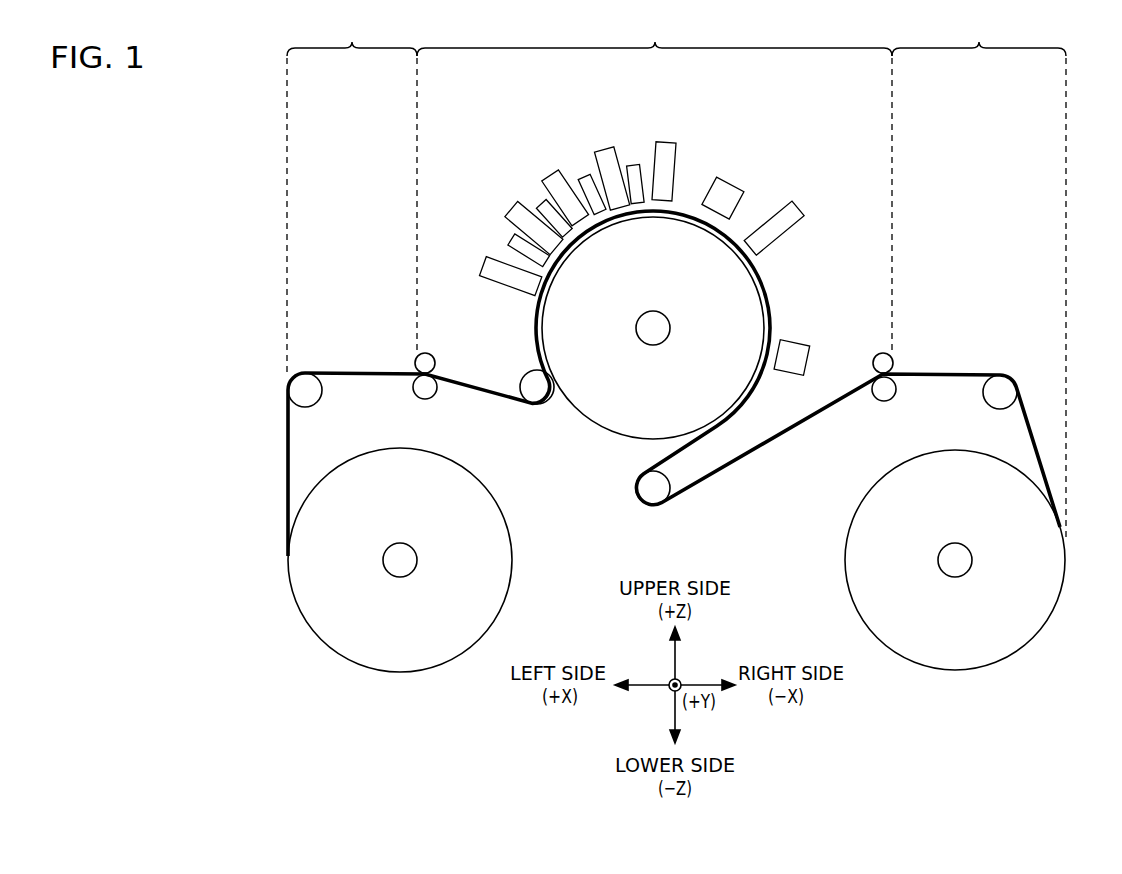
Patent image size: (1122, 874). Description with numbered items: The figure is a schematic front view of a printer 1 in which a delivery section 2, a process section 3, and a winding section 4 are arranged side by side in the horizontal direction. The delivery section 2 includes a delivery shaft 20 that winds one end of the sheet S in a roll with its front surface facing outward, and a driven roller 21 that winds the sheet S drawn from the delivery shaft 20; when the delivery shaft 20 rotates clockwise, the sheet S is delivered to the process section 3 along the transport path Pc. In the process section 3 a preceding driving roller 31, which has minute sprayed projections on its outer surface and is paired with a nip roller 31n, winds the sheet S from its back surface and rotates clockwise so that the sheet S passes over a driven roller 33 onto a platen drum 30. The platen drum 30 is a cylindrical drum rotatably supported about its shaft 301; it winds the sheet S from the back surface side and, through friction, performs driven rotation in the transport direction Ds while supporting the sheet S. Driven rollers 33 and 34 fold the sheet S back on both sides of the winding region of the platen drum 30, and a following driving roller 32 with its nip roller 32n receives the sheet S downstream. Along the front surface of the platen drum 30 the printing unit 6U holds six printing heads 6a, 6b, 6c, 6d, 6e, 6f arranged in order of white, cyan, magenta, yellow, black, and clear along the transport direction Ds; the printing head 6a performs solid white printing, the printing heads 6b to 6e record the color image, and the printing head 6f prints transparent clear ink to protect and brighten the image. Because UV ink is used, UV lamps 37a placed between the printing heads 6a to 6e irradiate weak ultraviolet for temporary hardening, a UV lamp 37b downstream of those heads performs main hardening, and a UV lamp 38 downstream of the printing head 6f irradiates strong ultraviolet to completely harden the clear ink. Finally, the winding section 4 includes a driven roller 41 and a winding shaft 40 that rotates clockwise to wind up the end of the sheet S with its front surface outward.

The printer 1 is at (251, 103).
The delivery section 2 is at (352, 197).
The process section 3 is at (654, 188).
The winding section 4 is at (979, 280).
The printing unit 6U is at (731, 120).
The printing head 6a is at (490, 262).
The printing head 6b is at (512, 215).
The printing head 6c is at (558, 175).
The printing head 6d is at (603, 155).
The printing head 6e is at (669, 155).
The printing head 6f is at (791, 211).
The UV lamp 37a is at (512, 243).
The UV lamp 37b is at (727, 188).
The UV lamp 38 is at (800, 361).
The delivery shaft 20 is at (401, 572).
The driven roller 21 is at (311, 398).
The preceding driving roller 31 is at (434, 390).
The nip roller 31n is at (428, 360).
The following driving roller 32 is at (885, 398).
The nip roller 32n is at (887, 361).
The driven roller 33 is at (532, 378).
The driven roller 34 is at (656, 494).
The platen drum 30 is at (595, 407).
The shaft of platen drum 301 is at (651, 342).
The winding shaft 40 is at (956, 572).
The driven roller 41 is at (990, 392).
The sheet S is at (288, 427).
The transport path Pc is at (710, 488).
The transport direction Ds is at (704, 239).